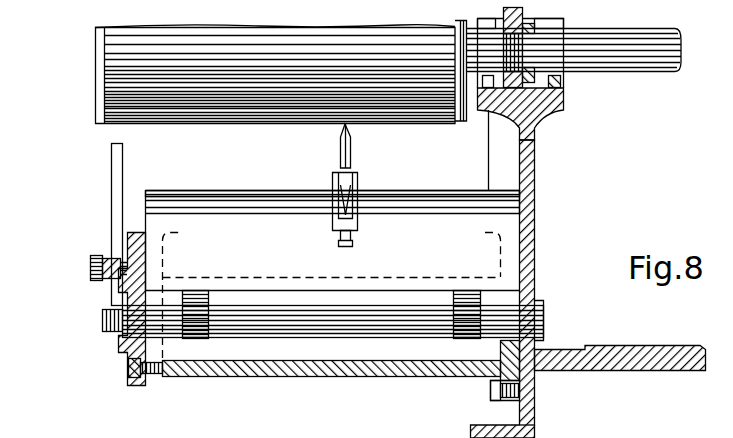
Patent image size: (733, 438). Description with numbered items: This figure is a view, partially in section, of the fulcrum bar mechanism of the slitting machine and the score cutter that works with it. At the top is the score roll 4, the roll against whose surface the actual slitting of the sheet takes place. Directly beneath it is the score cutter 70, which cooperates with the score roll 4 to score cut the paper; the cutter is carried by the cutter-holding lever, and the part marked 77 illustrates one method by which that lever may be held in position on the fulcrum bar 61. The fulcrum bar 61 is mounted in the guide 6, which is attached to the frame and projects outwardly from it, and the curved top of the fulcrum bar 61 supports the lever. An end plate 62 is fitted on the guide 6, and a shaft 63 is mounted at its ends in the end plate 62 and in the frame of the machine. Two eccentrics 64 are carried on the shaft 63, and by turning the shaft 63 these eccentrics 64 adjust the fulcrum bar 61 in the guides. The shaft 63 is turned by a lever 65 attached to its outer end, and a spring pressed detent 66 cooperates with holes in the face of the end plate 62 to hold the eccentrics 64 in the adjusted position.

The score roll 4 is at (250, 110).
The guide 6 is at (306, 377).
The fulcrum bar 61 is at (332, 275).
The end plate 62 is at (125, 346).
The shaft 63 is at (390, 320).
The eccentrics 64 is at (196, 300).
The lever 65 is at (117, 182).
The spring pressed detent 66 is at (92, 262).
The score cutter 70 is at (352, 135).
The cutter lever holding means 77 is at (357, 180).